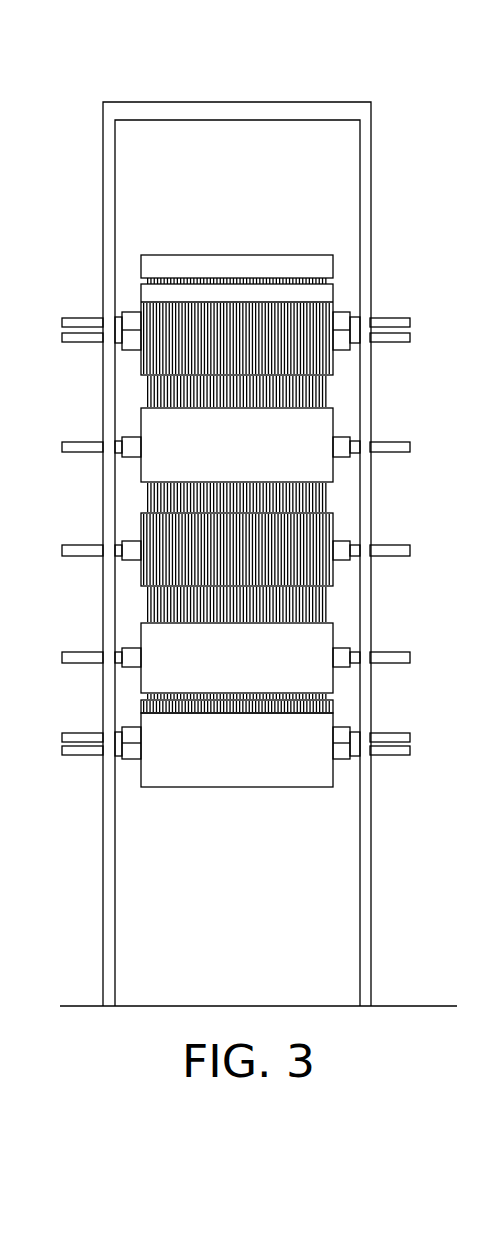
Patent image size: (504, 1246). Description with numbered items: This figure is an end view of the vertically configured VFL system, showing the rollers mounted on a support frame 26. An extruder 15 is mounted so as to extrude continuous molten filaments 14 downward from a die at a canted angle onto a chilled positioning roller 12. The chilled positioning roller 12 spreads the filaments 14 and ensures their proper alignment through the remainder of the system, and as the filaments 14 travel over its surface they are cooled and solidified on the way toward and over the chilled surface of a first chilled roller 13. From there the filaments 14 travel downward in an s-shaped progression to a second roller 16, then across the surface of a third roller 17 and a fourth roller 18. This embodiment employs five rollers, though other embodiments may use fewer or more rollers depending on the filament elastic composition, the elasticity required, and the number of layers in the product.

The support frame 26 is at (265, 116).
The extruder 15 is at (170, 269).
The chilled positioning roller 12 is at (330, 362).
The continuous molten filaments 14 is at (170, 395).
The first chilled roller 13 is at (308, 422).
The second roller 16 is at (143, 525).
The third roller 17 is at (277, 638).
The fourth roller 18 is at (177, 770).